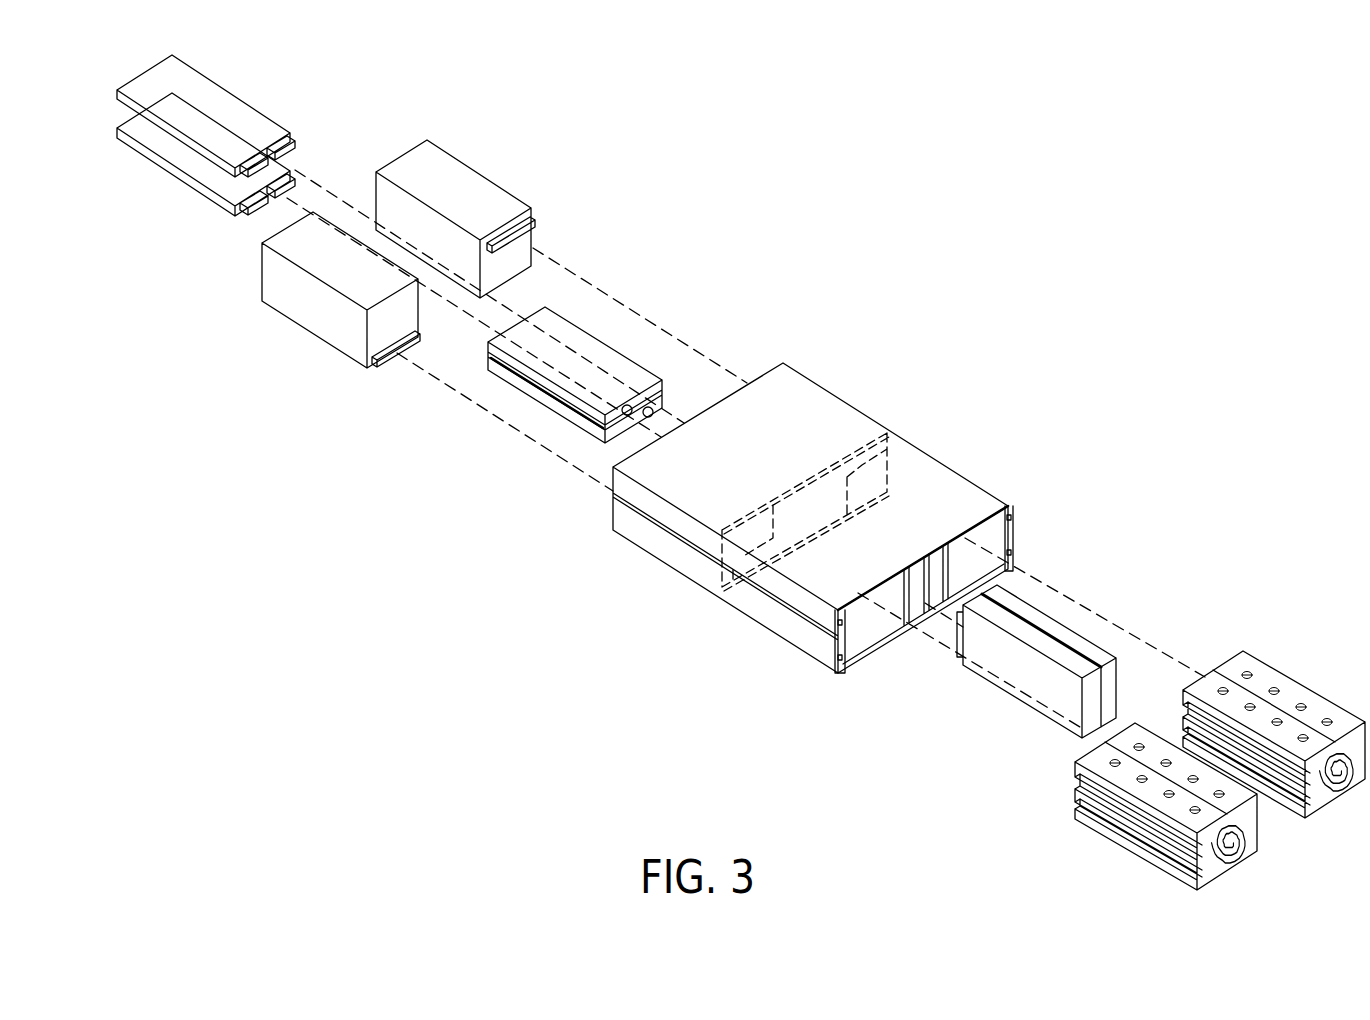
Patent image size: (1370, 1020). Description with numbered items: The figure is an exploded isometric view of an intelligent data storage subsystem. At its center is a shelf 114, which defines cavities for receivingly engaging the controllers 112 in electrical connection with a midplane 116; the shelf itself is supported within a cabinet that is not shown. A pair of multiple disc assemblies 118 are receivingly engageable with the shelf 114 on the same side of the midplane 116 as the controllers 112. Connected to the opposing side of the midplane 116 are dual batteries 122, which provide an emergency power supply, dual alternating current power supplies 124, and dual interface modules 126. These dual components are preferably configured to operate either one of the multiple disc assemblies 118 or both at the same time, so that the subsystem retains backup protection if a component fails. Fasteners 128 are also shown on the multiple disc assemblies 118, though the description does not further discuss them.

The controller 112 is at (1070, 638).
The shelf 114 is at (790, 516).
The midplane 116 is at (812, 493).
The multiple disc assembly (MDA) 118 is at (1180, 745).
The battery 122 is at (568, 330).
The alternating current power supply 124 is at (450, 190).
The interface module 126 is at (232, 108).
The fastener 128 is at (1232, 662).